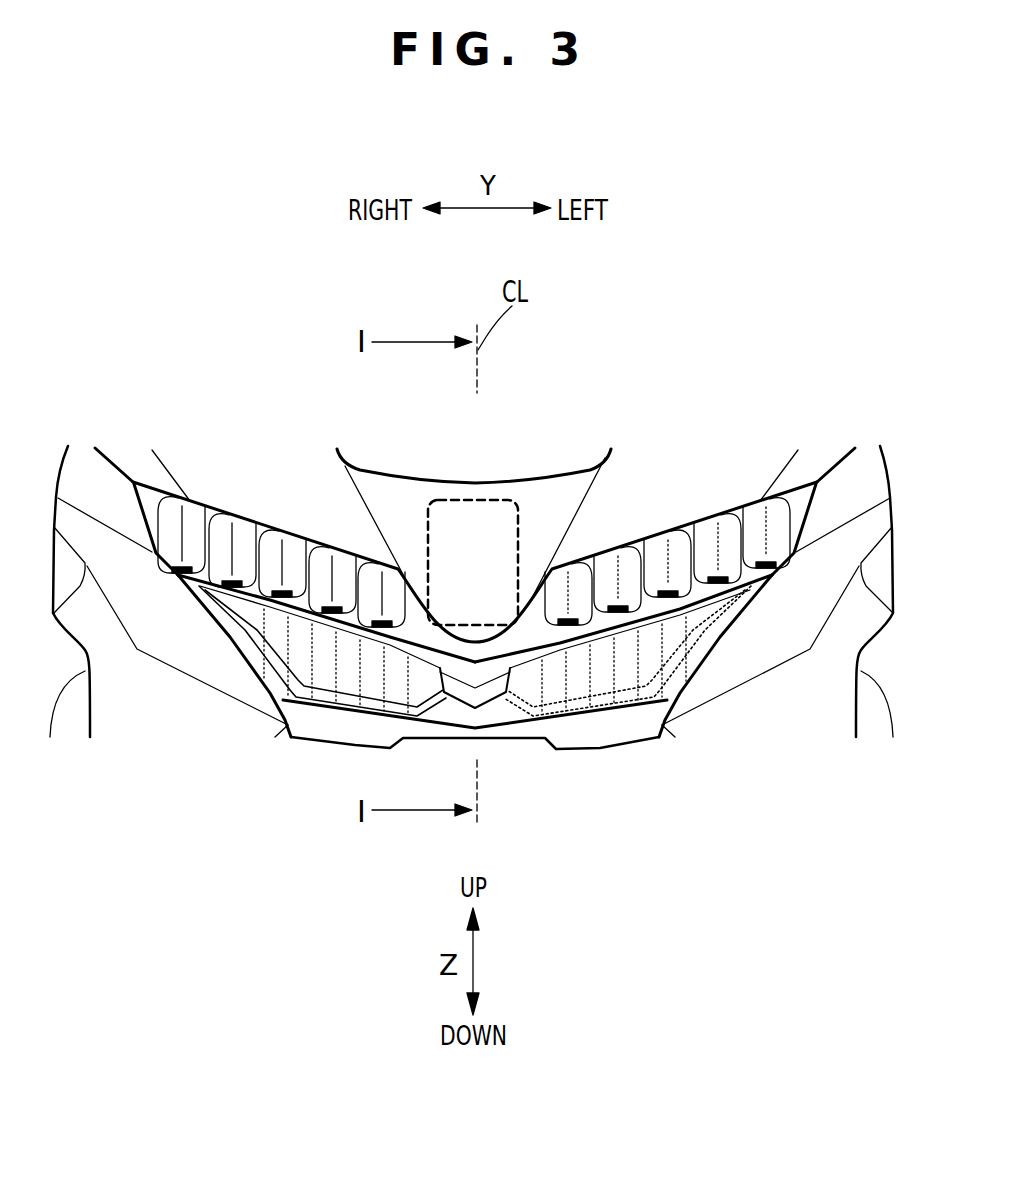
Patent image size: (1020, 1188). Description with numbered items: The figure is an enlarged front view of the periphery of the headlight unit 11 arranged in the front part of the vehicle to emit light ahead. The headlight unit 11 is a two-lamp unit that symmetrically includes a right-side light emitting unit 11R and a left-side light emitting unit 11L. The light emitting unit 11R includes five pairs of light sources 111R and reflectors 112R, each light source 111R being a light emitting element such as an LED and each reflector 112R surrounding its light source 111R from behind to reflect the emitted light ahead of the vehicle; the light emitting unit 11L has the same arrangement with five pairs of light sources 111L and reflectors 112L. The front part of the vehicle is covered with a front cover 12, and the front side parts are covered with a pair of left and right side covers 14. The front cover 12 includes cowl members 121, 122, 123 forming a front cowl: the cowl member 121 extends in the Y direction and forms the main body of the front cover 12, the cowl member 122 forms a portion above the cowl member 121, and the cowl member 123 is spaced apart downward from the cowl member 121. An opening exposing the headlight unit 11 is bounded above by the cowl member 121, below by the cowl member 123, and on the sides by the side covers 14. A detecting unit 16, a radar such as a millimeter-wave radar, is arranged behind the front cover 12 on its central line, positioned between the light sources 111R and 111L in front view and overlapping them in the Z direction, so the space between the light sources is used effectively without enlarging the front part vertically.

The headlight unit 11 is at (500, 745).
The right-side light emitting unit 11R is at (261, 512).
The left-side light emitting unit 11L is at (683, 511).
The light source 111R is at (180, 580).
The light source 111L is at (619, 612).
The reflector 112R is at (148, 484).
The reflector 112L is at (634, 537).
The front cover 12 is at (770, 422).
The cowl member 121 is at (560, 484).
The cowl member 122 is at (528, 485).
The cowl member 123 is at (588, 730).
The side cover 14 is at (180, 650).
The detecting unit 16 is at (487, 508).